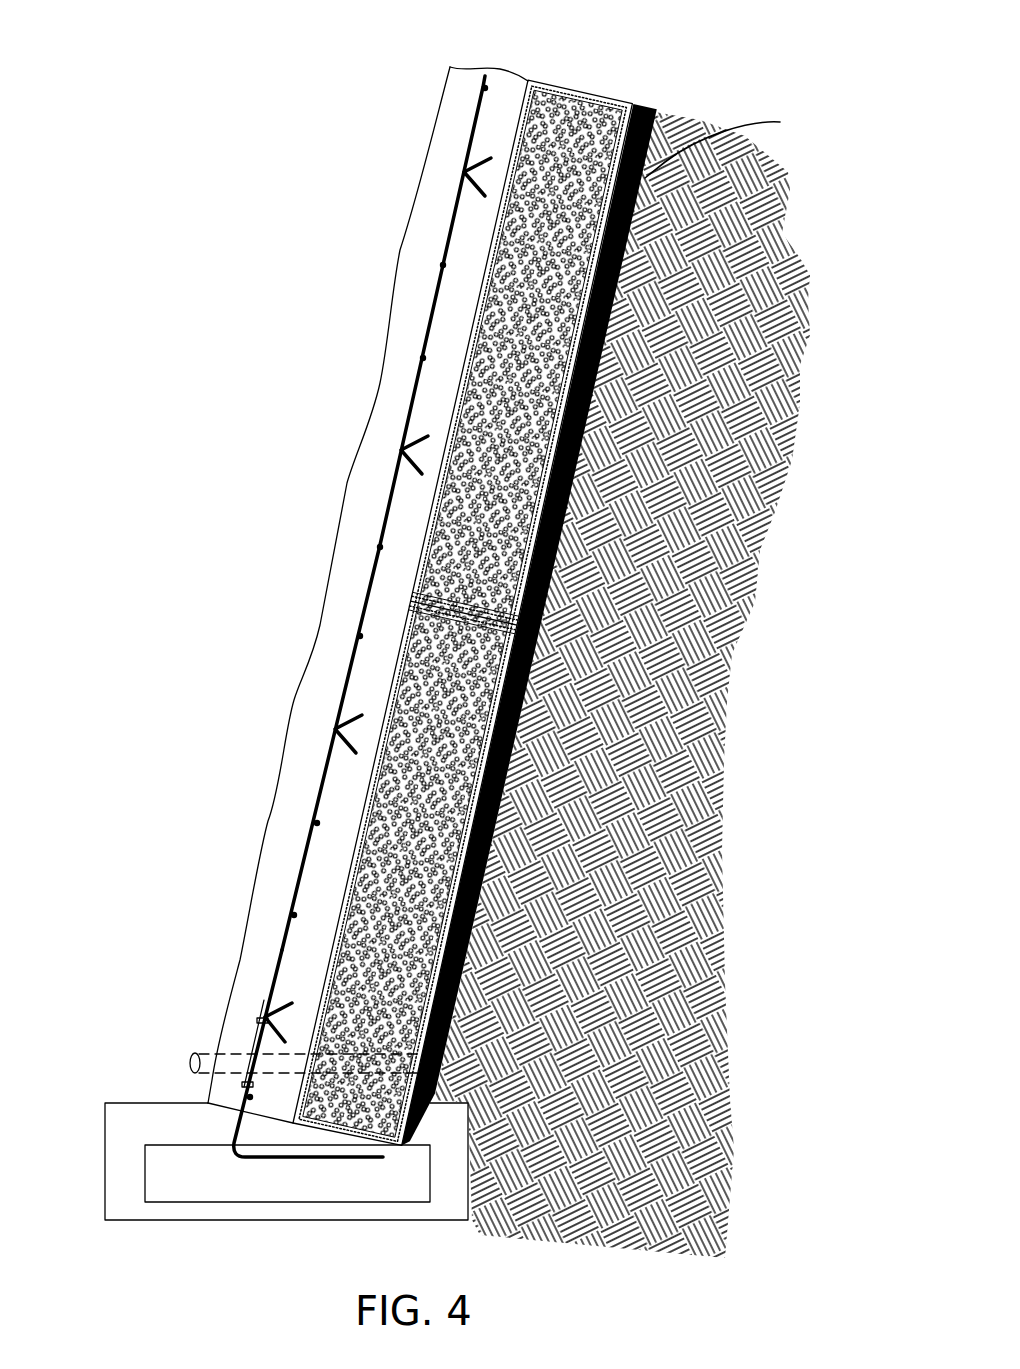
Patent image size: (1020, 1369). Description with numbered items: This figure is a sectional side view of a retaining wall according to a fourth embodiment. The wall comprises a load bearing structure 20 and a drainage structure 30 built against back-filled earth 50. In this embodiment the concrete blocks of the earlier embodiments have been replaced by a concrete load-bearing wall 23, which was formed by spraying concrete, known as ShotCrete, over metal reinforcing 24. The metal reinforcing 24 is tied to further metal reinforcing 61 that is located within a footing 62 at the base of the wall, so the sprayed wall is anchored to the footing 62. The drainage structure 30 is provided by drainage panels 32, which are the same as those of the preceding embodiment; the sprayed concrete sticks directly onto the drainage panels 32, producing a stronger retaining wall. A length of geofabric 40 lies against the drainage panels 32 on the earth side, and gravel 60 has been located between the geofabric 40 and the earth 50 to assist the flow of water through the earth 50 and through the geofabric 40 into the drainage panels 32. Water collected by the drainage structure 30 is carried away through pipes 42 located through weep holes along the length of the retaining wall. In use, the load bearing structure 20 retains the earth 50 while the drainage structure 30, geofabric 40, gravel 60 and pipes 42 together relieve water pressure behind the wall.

The load bearing structure 20 is at (383, 197).
The concrete load-bearing wall 23 is at (357, 503).
The metal reinforcing 24 is at (427, 323).
The drainage structure 30 is at (412, 573).
The drainage panels 32 is at (392, 806).
The geofabric 40 is at (637, 104).
The pipes 42 is at (210, 1060).
The earth 50 is at (697, 496).
The gravel 60 is at (735, 141).
The metal reinforcing 61 is at (227, 1132).
The footing 62 is at (253, 1202).